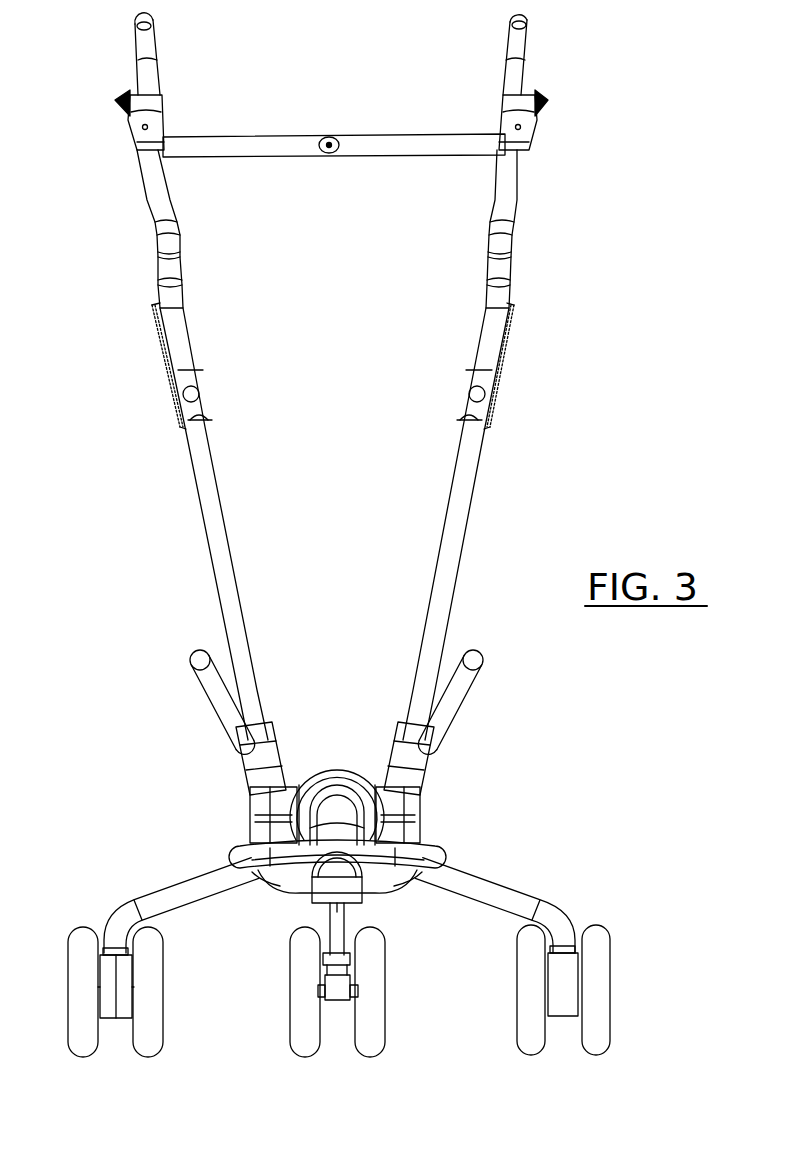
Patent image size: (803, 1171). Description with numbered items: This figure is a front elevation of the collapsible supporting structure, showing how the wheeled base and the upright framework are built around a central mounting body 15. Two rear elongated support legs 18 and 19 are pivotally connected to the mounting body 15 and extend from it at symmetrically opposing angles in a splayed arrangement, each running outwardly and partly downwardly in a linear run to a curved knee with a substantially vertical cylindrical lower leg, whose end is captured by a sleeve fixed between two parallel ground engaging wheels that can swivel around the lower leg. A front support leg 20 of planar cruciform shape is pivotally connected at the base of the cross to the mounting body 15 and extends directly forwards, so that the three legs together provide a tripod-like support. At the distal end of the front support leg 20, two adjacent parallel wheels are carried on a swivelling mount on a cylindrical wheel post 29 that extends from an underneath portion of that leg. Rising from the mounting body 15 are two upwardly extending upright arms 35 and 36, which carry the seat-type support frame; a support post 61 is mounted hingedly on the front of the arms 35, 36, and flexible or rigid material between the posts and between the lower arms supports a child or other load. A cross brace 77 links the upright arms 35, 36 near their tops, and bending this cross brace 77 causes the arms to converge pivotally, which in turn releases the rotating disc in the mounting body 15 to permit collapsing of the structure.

The cross brace 77 is at (247, 136).
The upright arm 36 is at (217, 540).
The upright arm 35 is at (453, 552).
The support post 61 is at (458, 703).
The mounting body 15 is at (357, 770).
The front support leg 20 is at (348, 831).
The rear support leg 19 is at (198, 892).
The rear support leg 18 is at (498, 888).
The cylindrical wheel post 29 is at (341, 937).